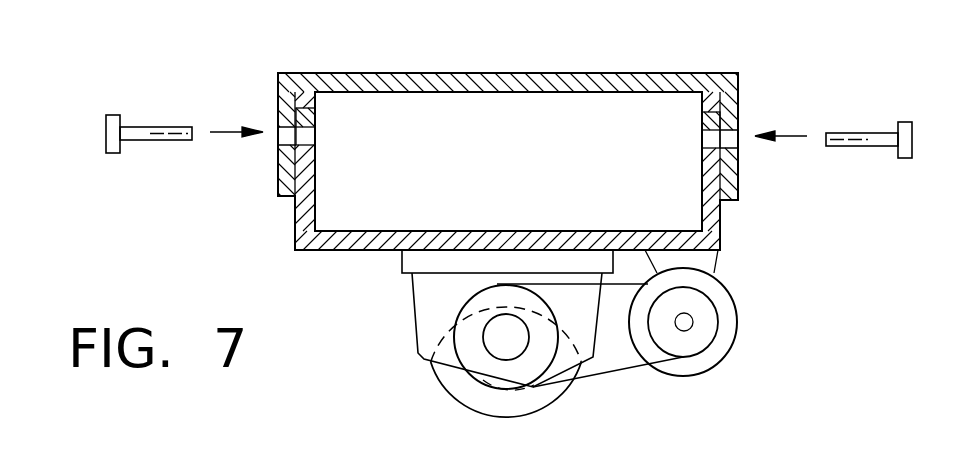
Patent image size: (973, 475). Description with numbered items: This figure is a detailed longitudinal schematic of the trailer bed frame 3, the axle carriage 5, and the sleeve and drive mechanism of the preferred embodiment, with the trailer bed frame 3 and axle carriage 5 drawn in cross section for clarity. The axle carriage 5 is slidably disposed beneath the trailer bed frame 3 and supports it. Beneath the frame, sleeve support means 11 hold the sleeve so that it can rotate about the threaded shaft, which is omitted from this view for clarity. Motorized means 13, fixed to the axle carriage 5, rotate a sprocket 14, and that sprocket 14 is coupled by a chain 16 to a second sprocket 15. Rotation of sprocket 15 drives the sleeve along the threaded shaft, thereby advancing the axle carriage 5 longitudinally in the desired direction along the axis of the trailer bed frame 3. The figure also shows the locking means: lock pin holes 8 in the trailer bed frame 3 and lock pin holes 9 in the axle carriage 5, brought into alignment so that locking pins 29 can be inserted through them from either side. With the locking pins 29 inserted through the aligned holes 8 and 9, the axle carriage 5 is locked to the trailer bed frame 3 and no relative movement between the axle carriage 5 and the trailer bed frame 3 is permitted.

The trailer bed frame 3 is at (415, 72).
The axle carriage 5 is at (322, 243).
The lock pin hole 8 is at (278, 135).
The lock pin hole 9 is at (310, 132).
The sleeve support means 11 is at (423, 291).
The motorized means 13 is at (727, 312).
The sprocket 14 is at (703, 337).
The sprocket 15 is at (468, 347).
The chain 16 is at (618, 372).
The locking pin 29 is at (148, 143).